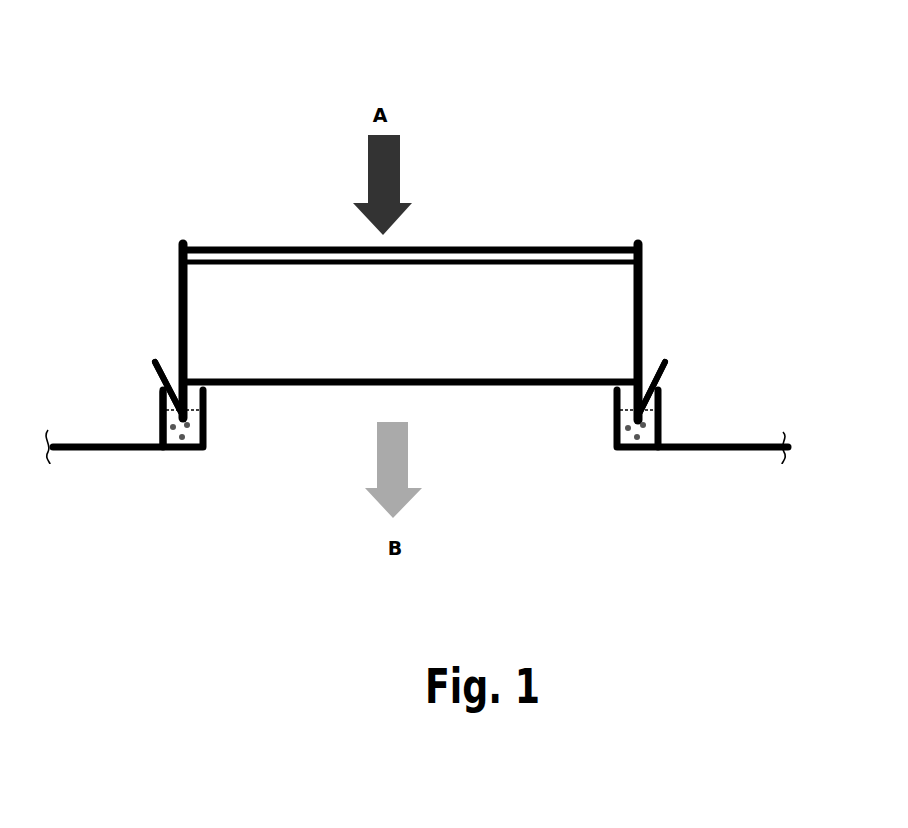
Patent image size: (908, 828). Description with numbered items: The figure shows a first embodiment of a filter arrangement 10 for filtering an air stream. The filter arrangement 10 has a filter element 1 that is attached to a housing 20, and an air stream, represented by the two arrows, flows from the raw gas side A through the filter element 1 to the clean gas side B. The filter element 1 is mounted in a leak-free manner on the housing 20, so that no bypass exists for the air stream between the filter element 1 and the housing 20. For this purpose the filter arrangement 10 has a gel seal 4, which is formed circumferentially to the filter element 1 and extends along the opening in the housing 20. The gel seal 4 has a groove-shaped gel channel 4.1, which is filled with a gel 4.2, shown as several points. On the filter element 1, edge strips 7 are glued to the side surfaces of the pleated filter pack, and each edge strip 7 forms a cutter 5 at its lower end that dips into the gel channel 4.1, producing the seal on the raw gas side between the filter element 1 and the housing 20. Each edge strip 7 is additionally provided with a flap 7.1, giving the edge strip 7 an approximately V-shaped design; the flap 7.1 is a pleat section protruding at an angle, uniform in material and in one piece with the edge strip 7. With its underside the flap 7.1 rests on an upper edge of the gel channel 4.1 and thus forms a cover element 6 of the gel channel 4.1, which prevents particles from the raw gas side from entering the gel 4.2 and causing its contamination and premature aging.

The filter arrangement 10 is at (744, 111).
The filter element 1 is at (594, 248).
The edge strip 7 is at (650, 317).
The cover element 6 is at (656, 415).
The flap 7.1 is at (518, 341).
The cutter 5 is at (675, 368).
The gel seal 4 is at (109, 361).
The gel channel 4.1 is at (666, 430).
The gel 4.2 is at (160, 432).
The housing 20 is at (740, 450).